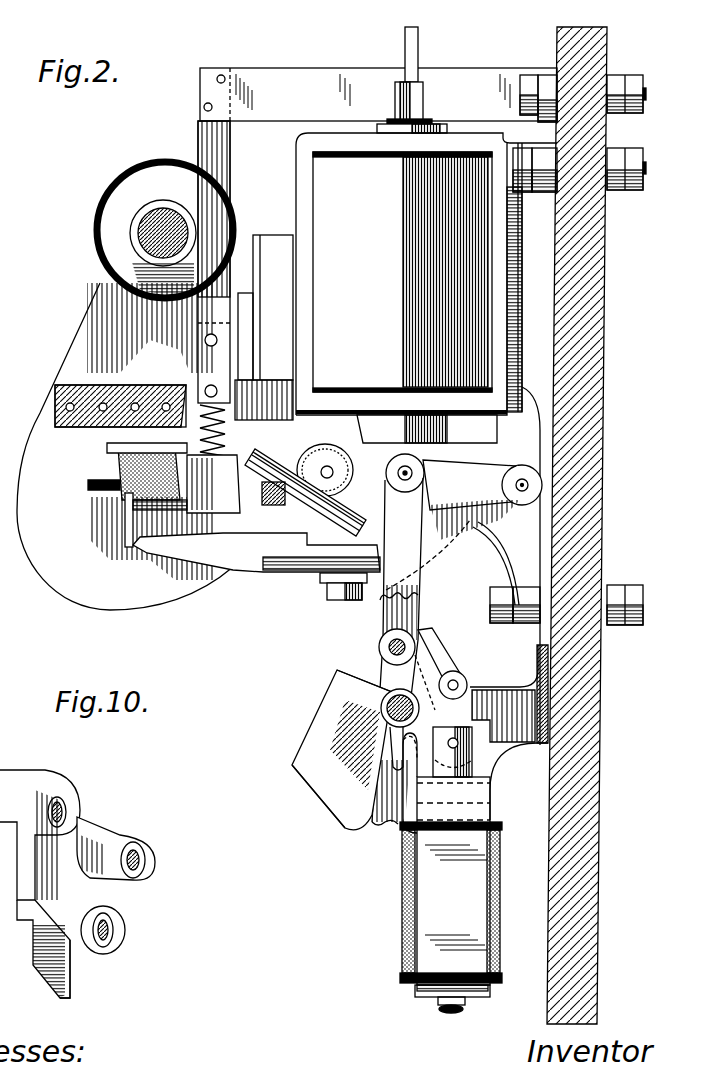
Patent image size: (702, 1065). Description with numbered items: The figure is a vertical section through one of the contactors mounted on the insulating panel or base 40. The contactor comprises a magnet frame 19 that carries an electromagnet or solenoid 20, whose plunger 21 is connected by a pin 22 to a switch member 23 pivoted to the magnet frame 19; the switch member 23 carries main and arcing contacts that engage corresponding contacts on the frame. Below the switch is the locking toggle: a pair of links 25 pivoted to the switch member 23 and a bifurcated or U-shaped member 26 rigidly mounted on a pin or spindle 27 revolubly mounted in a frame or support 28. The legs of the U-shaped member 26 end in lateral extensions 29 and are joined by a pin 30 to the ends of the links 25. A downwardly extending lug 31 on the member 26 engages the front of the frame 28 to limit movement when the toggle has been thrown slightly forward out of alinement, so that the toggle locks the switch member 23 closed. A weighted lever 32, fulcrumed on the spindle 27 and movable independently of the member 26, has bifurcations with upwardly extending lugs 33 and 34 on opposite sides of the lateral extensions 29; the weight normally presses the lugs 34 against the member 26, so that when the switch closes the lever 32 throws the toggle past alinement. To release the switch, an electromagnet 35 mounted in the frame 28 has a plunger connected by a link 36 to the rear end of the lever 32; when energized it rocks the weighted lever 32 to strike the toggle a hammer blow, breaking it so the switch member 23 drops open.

In FIG. 2, the magnet frame 19 is at (512, 298).
In FIG. 2, the electromagnet or solenoid 20 is at (426, 274).
In FIG. 2, the plunger 21 is at (428, 456).
In FIG. 2, the pin 22 is at (410, 476).
In FIG. 2, the switch member 23 is at (260, 567).
In FIG. 2, the links 25 is at (387, 587).
In FIG. 2, the bifurcated or U-shaped member 26 is at (383, 701).
In FIG. 10, the bifurcated or U-shaped member 26 is at (118, 900).
In FIG. 2, the pin or spindle 27 is at (397, 762).
In FIG. 2, the frame or support 28 is at (430, 909).
In FIG. 10, the lateral extensions 29 is at (125, 832).
In FIG. 2, the pin 30 is at (380, 647).
In FIG. 2, the downwardly extending lug 31 is at (398, 722).
In FIG. 10, the downwardly extending lug 31 is at (72, 975).
In FIG. 2, the weighted lever 32 is at (337, 713).
In FIG. 2, the upwardly extending lug 33 is at (340, 676).
In FIG. 2, the upwardly extending lug 34 is at (422, 640).
In FIG. 2, the electromagnet 35 is at (402, 881).
In FIG. 2, the link 36 is at (468, 716).
In FIG. 2, the insulating panel or base 40 is at (590, 946).